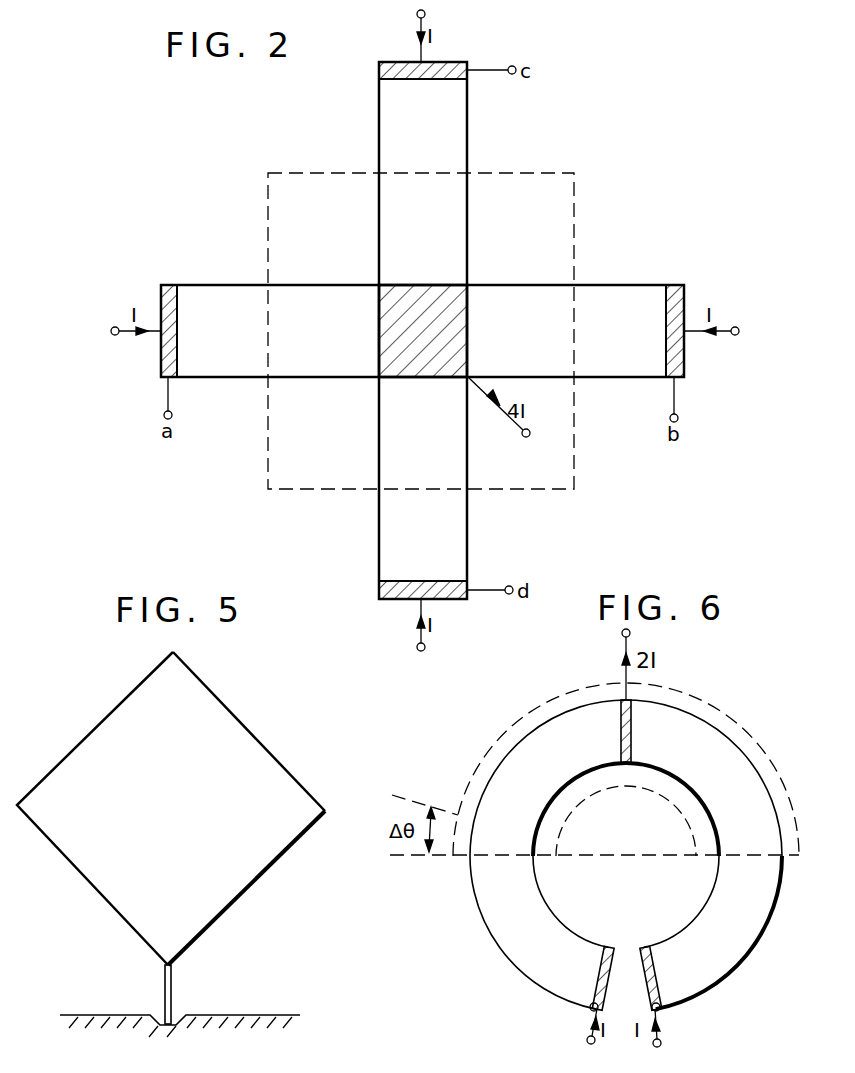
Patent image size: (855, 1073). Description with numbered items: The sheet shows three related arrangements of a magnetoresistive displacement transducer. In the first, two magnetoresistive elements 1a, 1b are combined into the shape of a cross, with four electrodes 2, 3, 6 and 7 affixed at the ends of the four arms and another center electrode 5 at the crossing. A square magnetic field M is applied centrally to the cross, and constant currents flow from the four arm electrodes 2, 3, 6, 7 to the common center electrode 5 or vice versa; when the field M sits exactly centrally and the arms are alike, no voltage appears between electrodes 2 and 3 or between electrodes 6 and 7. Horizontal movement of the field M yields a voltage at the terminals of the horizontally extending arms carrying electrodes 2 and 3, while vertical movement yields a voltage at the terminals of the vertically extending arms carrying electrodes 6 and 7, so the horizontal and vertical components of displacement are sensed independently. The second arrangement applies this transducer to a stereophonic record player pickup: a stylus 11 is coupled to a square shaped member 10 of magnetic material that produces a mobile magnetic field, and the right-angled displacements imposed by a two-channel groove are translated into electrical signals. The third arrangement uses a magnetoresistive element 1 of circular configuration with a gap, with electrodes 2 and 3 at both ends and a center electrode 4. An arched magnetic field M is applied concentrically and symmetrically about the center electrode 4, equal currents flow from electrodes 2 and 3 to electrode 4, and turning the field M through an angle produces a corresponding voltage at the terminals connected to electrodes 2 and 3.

In FIG. 6, the magnetoresistive element 1 is at (760, 815).
In FIG. 2, the magnetoresistive element 1a is at (503, 143).
In FIG. 2, the magnetoresistive element 1b is at (601, 367).
In FIG. 2, the electrode 2 is at (166, 360).
In FIG. 6, the electrode 2 is at (590, 1012).
In FIG. 2, the electrode 3 is at (676, 360).
In FIG. 6, the electrode 3 is at (656, 1015).
In FIG. 6, the center electrode 4 is at (620, 705).
In FIG. 2, the center electrode 5 is at (468, 284).
In FIG. 2, the electrode 6 is at (380, 71).
In FIG. 2, the electrode 7 is at (381, 590).
In FIG. 2, the magnetic field M is at (565, 207).
In FIG. 6, the magnetic field M is at (753, 742).
In FIG. 5, the square shaped member 10 is at (266, 846).
In FIG. 5, the stylus 11 is at (172, 993).